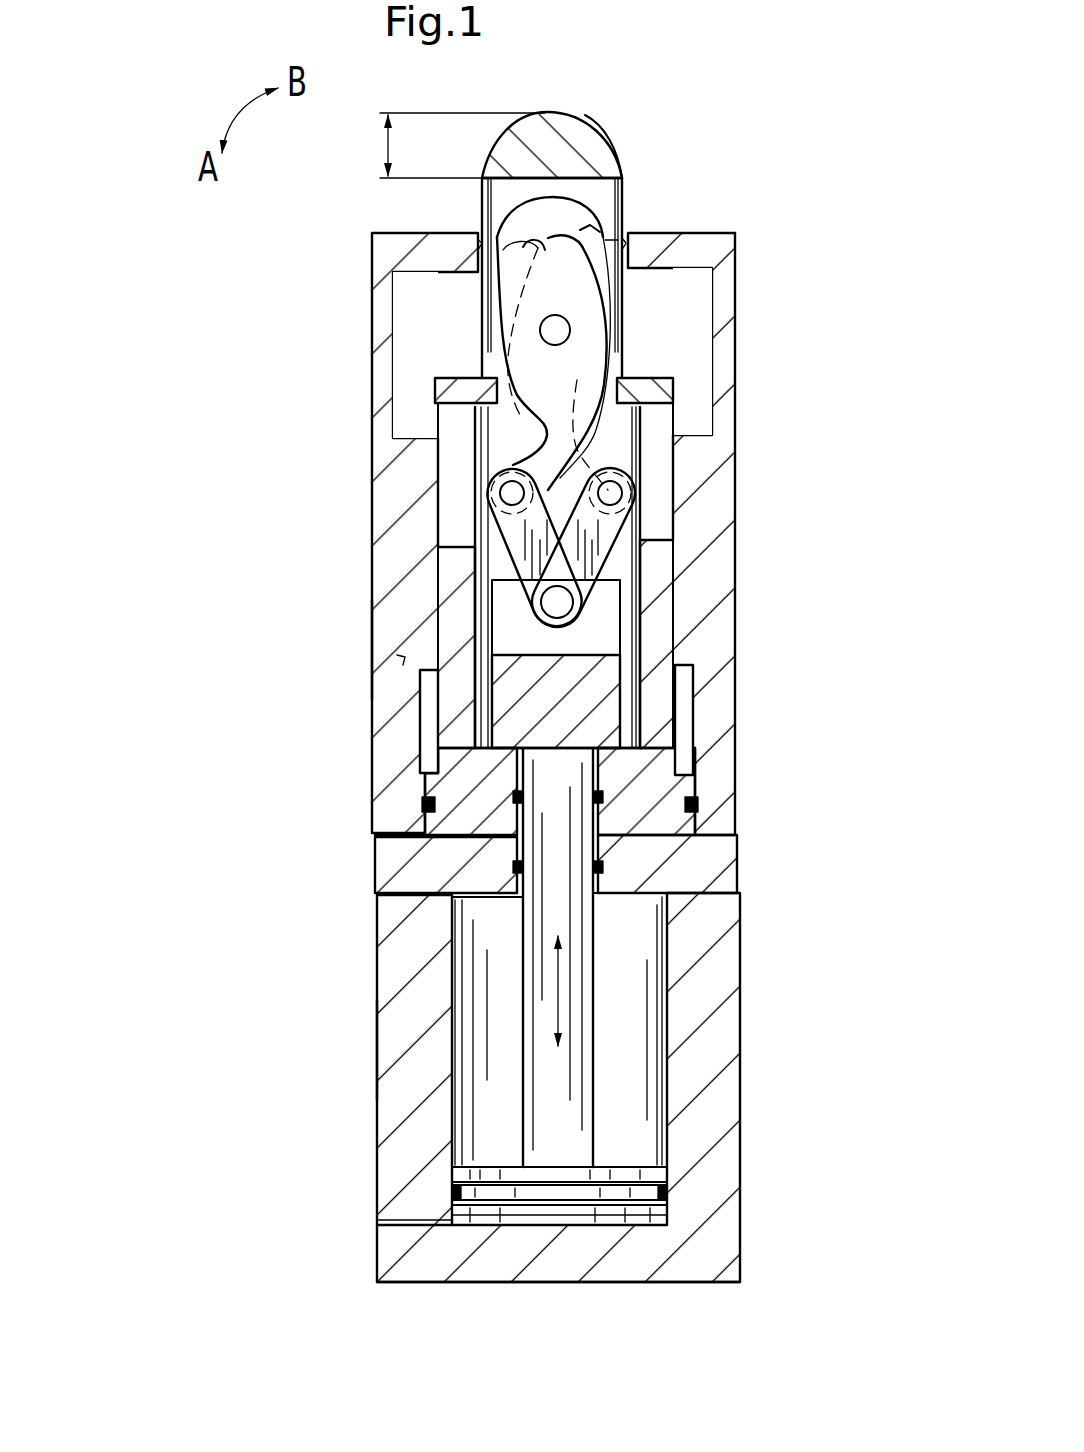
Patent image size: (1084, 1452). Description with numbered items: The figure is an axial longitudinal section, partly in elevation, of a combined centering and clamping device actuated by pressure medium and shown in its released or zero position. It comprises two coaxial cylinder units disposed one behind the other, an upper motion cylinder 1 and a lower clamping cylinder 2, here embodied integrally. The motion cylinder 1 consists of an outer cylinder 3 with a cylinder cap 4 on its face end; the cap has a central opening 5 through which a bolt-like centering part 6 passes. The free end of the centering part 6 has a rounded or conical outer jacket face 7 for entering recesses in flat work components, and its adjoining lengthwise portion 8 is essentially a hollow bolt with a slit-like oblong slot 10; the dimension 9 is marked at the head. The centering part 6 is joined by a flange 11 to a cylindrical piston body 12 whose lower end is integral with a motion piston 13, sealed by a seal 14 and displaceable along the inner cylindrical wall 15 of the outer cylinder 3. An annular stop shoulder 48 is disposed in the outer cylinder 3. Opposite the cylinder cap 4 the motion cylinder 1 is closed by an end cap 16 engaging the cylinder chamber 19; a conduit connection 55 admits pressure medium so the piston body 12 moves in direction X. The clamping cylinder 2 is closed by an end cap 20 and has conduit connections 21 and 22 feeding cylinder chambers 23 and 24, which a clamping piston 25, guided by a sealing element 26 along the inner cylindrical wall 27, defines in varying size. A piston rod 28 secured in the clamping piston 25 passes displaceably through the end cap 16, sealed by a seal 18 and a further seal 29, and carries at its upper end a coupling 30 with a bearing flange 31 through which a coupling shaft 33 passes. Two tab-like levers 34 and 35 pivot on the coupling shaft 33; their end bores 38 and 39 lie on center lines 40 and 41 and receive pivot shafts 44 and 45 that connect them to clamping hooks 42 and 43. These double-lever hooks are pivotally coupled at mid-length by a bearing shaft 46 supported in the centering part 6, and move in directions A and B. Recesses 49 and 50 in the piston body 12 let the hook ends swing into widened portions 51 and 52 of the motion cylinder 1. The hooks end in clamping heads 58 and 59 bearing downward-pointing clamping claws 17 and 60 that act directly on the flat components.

The motion cylinder 1 is at (346, 688).
The clamping cylinder 2 is at (346, 1043).
The outer cylinder 3 is at (383, 603).
The cylinder cap 4 is at (701, 237).
The central opening 5 is at (612, 240).
The centering part 6 is at (553, 133).
The outer jacket face 7 is at (603, 143).
The lengthwise portion 8 is at (478, 205).
The stroke 9 is at (455, 145).
The oblong slot 10 is at (495, 350).
The flange 11 is at (645, 392).
The piston body 12 is at (448, 702).
The motion piston 13 is at (458, 792).
The seal 14 is at (453, 824).
The inner cylindrical wall 15 is at (695, 714).
The end cap 16 is at (690, 887).
The clamping claw 17 is at (522, 252).
The seal 18 is at (600, 862).
The cylinder chamber 19 is at (690, 688).
The end cap 20 is at (433, 1268).
The conduit connection 21 is at (460, 905).
The conduit connection 22 is at (455, 1222).
The cylinder chamber 23 is at (667, 1225).
The cylinder chamber 24 is at (643, 1043).
The clamping piston 25 is at (580, 1212).
The sealing element 26 is at (663, 1190).
The inner cylindrical wall 27 is at (654, 944).
The piston rod 28 is at (580, 1110).
The seal 29 is at (603, 797).
The coupling 30 is at (515, 720).
The bearing flange 31 is at (605, 625).
The coupling shaft 33 is at (570, 600).
The tab-like lever 34 is at (528, 558).
The tab-like lever 35 is at (595, 560).
The bore 38 is at (507, 495).
The bore 39 is at (610, 480).
The center line 40 is at (520, 540).
The center line 41 is at (600, 540).
The clamping hook 42 is at (592, 290).
The clamping hook 43 is at (517, 275).
The pivot shaft 44 is at (508, 510).
The pivot shaft 45 is at (620, 508).
The bearing shaft 46 is at (560, 332).
The stop shoulder 48 is at (406, 660).
The recess 49 is at (450, 420).
The recess 50 is at (660, 428).
The widened portion 51 is at (413, 320).
The widened portion 52 is at (695, 355).
The conduit connection 55 is at (440, 855).
The clamping head 58 is at (581, 230).
The clamping head 59 is at (480, 243).
The clamping claw 60 is at (628, 240).